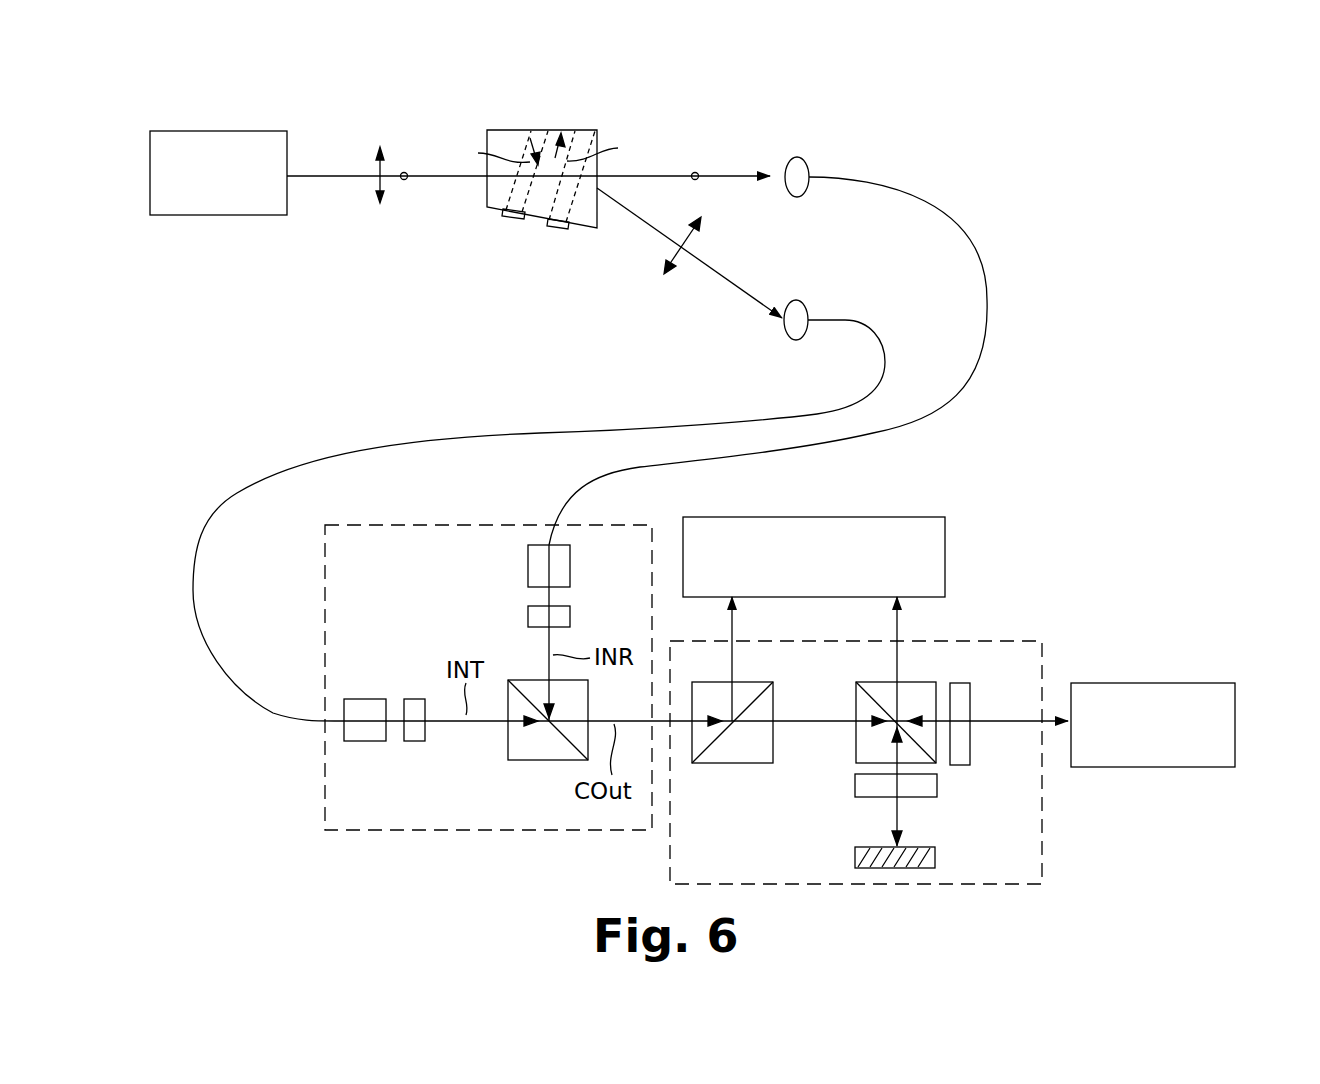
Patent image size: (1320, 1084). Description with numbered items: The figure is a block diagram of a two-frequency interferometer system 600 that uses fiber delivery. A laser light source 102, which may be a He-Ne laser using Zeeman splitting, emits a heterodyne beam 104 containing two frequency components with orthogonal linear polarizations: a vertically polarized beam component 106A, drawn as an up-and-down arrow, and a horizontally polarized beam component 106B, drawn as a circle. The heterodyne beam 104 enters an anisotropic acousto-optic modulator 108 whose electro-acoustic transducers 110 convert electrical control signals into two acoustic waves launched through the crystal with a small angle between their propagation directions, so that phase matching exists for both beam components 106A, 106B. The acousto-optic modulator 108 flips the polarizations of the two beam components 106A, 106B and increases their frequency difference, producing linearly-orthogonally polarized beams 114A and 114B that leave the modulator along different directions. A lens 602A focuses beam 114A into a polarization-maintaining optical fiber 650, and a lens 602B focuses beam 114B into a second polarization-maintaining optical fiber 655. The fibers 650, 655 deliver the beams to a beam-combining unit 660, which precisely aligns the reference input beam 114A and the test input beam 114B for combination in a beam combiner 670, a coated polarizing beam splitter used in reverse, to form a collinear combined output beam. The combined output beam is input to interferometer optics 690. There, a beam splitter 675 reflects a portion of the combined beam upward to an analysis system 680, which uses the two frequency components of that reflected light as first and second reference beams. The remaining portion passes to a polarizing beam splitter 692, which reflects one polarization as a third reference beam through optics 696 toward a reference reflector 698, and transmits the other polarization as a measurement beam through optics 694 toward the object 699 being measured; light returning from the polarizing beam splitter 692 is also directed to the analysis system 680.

The two-frequency interferometer system 600 is at (1098, 148).
The laser light source 102 is at (222, 131).
The heterodyne beam 104 is at (309, 175).
The vertically polarized beam component 106A is at (377, 172).
The horizontally polarized beam component 106B is at (404, 181).
The acousto-optic modulator 108 is at (515, 130).
The electro-acoustic transducers 110 is at (555, 230).
The first linearly polarized output beam 114A is at (694, 172).
The second linearly polarized output beam 114B is at (680, 240).
The lens 602A is at (806, 162).
The lens 602B is at (797, 300).
The polarization-maintaining optical fiber 650 is at (968, 235).
The polarization-maintaining optical fiber 655 is at (860, 321).
The beam-combining unit 660 is at (430, 525).
The beam combiner 670 is at (508, 745).
The beam splitter 675 is at (728, 763).
The analysis system 680 is at (838, 517).
The interferometer optics 690 is at (1008, 641).
The polarizing beam splitter 692 is at (880, 682).
The optics 694 is at (960, 683).
The optics 696 is at (855, 797).
The reference reflector 698 is at (937, 857).
The object 699 is at (1147, 683).